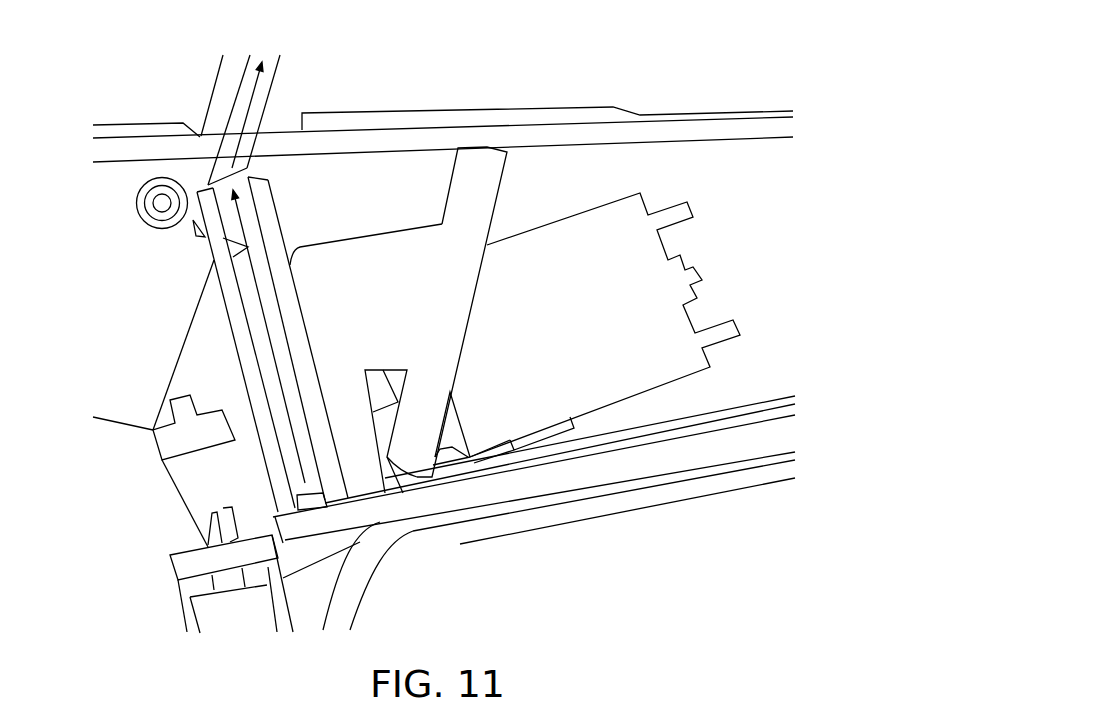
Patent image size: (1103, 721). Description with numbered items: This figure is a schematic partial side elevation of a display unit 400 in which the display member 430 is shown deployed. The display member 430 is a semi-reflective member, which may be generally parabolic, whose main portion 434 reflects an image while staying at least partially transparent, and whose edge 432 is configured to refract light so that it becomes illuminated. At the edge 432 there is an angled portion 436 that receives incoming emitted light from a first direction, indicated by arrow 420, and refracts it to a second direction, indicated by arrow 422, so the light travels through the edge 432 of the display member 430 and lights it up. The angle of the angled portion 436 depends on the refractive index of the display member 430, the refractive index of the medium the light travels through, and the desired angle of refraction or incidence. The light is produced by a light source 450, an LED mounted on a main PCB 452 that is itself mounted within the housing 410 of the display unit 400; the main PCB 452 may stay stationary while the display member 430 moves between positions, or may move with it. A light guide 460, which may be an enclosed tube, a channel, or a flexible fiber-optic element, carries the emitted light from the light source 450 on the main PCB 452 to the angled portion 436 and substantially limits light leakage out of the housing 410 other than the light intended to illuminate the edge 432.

The display unit 400 is at (700, 37).
The housing 410 is at (788, 127).
The arrow 420 is at (270, 343).
The arrow 422 is at (260, 120).
The display member 430 is at (237, 120).
The edge 432 is at (280, 82).
The main portion 434 is at (213, 93).
The angled portion 436 is at (256, 177).
The light source 450 is at (322, 505).
The main PCB 452 is at (418, 517).
The light guide 460 is at (310, 277).